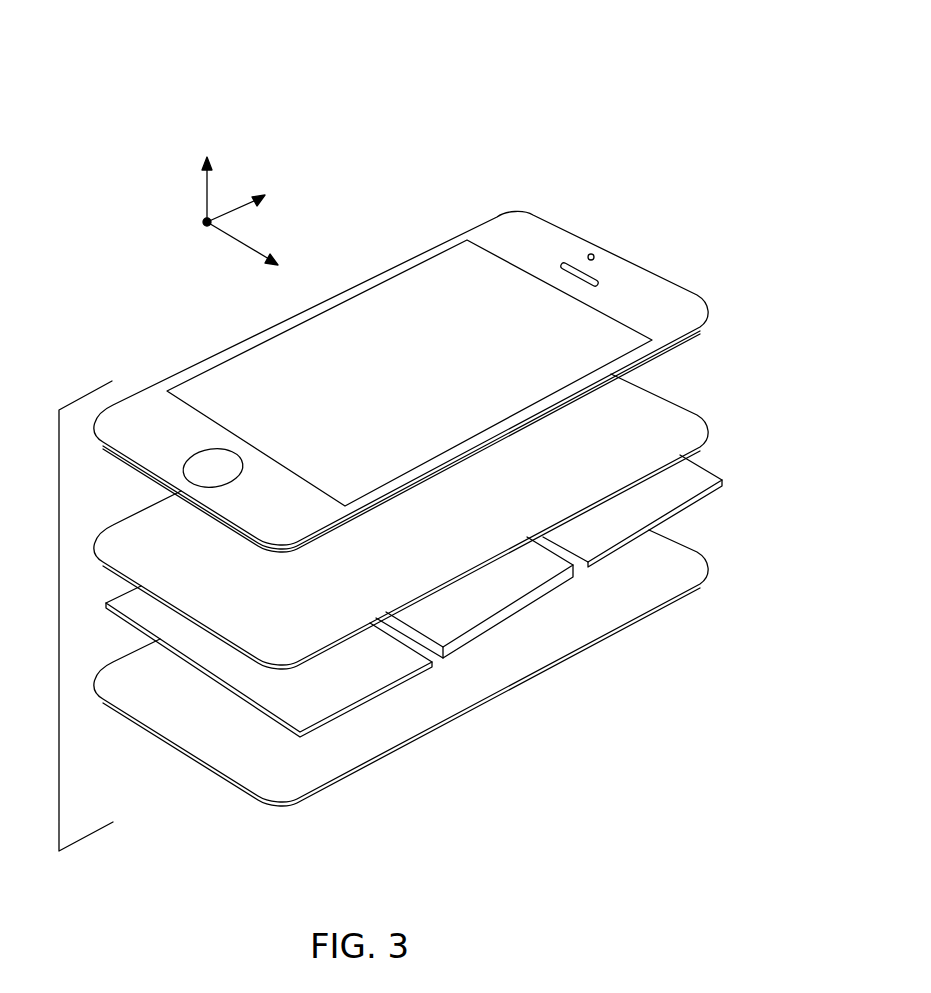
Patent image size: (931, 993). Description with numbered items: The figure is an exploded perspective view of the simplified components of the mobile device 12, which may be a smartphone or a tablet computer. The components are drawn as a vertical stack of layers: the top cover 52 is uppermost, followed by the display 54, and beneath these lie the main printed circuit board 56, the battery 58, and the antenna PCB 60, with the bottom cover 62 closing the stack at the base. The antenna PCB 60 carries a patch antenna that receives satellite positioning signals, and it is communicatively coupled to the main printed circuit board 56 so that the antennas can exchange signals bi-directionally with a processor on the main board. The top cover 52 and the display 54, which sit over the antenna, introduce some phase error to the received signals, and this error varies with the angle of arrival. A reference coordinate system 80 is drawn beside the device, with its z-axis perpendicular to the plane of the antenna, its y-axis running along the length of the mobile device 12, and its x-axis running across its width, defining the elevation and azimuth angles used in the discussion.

The mobile device 12 is at (675, 83).
The top cover 52 is at (663, 280).
The display 54 is at (675, 400).
The main printed circuit board 56 is at (717, 475).
The battery 58 is at (498, 625).
The antenna PCB 60 is at (358, 707).
The bottom cover 62 is at (655, 608).
The reference coordinate system 80 is at (205, 226).